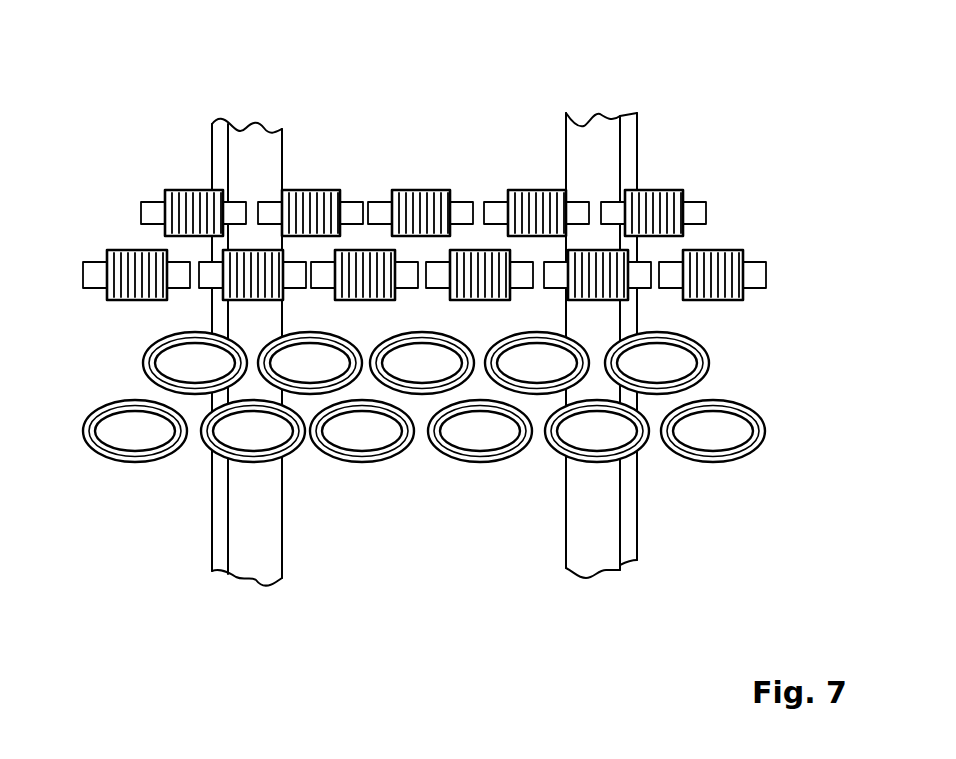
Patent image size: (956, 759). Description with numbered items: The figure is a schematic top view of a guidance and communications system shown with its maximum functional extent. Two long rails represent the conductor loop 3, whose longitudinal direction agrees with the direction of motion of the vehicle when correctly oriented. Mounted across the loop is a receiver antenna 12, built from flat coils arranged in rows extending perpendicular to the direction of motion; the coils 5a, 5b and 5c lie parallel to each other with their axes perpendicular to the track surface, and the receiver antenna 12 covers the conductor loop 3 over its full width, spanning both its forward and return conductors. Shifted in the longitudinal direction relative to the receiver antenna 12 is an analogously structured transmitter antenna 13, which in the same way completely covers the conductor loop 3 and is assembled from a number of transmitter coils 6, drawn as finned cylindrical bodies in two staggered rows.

The conductor loop 3 is at (593, 530).
The transmitter coil 6 is at (518, 190).
The transmitter antenna 13 is at (475, 201).
The receiver antenna 12 is at (475, 439).
The flat coil 5a is at (437, 452).
The flat coil 5b is at (550, 450).
The flat coil 5c is at (700, 462).